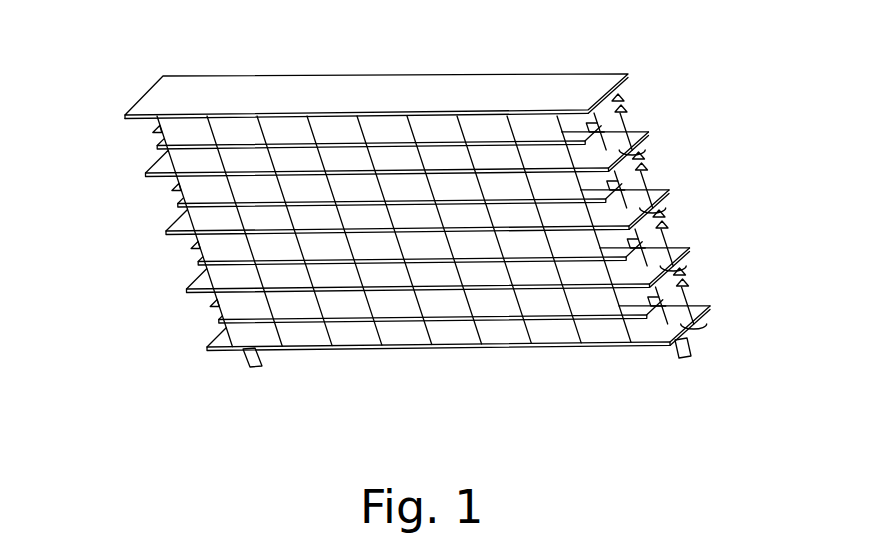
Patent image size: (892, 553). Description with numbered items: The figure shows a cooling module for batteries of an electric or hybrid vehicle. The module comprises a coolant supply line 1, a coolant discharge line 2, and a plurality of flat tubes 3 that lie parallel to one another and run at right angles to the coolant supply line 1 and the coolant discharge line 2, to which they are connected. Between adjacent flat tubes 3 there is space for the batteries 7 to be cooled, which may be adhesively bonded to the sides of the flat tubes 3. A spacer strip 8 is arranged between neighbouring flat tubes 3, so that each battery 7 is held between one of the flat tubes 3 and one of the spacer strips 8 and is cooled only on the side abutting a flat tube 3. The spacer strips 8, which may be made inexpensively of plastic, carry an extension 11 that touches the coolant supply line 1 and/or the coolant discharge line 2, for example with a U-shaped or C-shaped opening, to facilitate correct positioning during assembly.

The coolant supply line 1 is at (248, 351).
The coolant discharge line 2 is at (689, 339).
The flat tube 3 is at (162, 177).
The battery 7 is at (303, 333).
The spacer strip 8 is at (340, 145).
The extension 11 is at (620, 108).